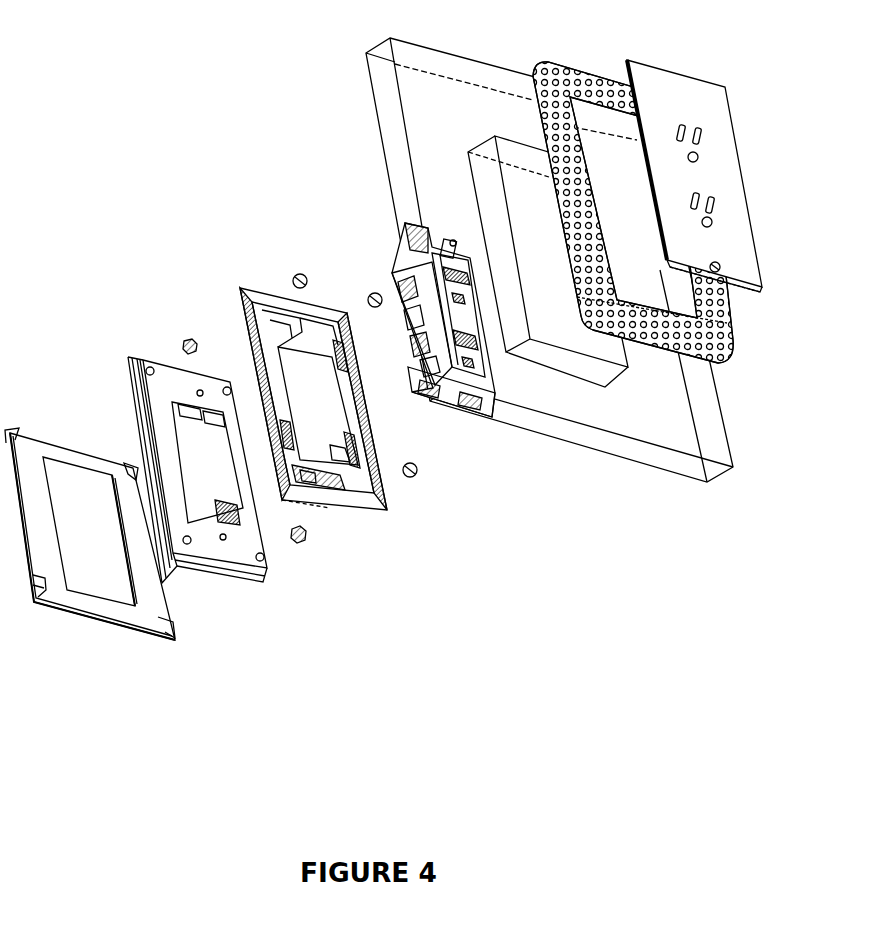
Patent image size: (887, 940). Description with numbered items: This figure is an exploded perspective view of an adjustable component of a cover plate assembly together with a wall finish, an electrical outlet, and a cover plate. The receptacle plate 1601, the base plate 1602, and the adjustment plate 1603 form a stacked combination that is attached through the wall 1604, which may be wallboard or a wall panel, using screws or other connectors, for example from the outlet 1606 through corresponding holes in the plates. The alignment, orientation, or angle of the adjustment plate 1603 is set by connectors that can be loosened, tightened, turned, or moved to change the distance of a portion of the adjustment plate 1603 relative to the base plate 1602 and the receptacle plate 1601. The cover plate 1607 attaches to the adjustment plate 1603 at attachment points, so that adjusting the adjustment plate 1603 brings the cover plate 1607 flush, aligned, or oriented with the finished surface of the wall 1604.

The receptacle plate 1601 is at (68, 420).
The base plate 1602 is at (137, 333).
The adjustment plate 1603 is at (242, 273).
The wall 1604 is at (350, 108).
The outlet 1606 is at (388, 243).
The cover plate 1607 is at (766, 310).